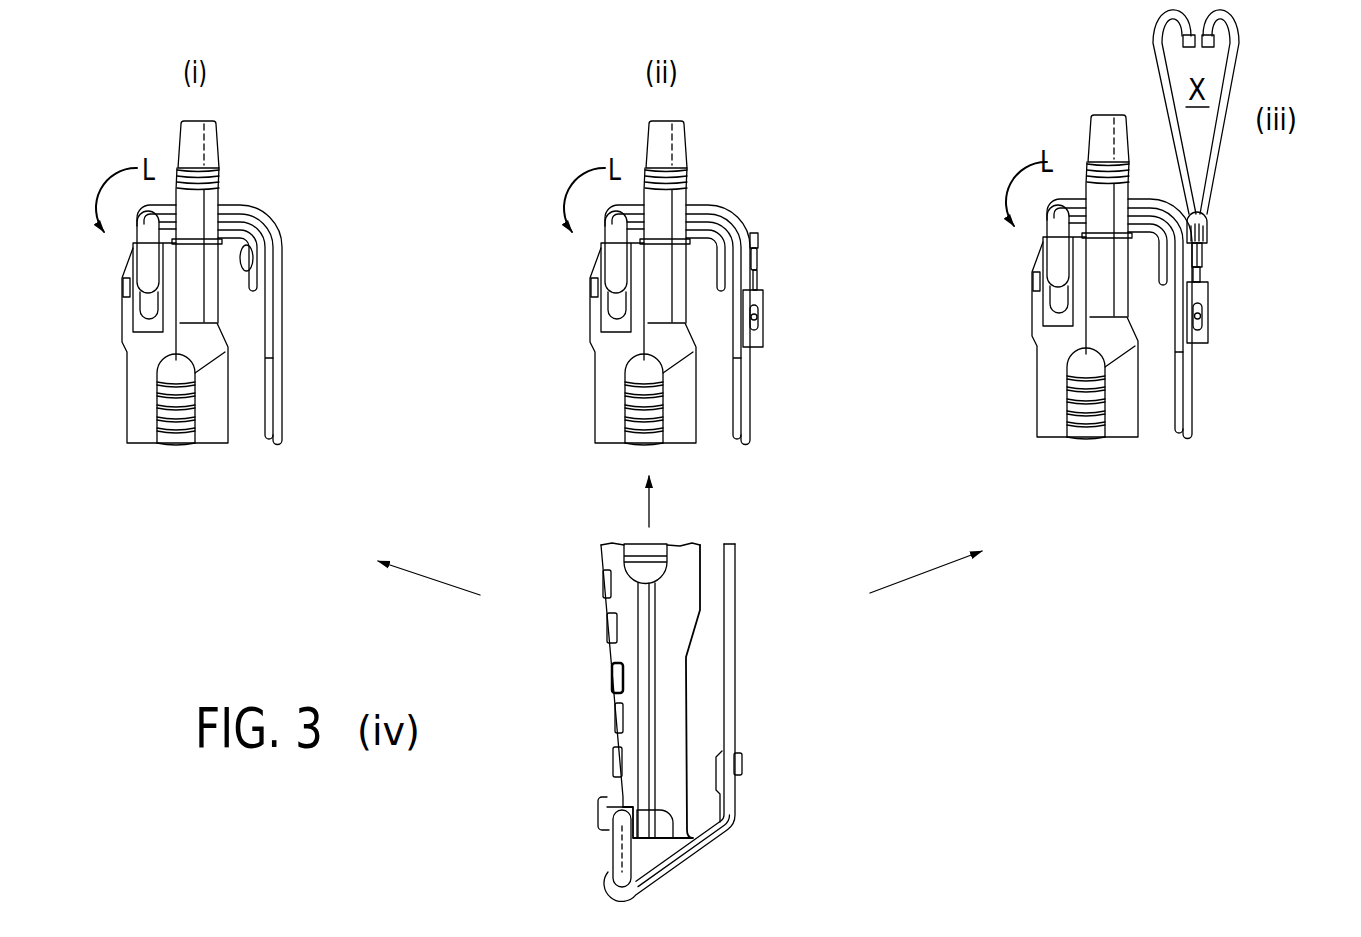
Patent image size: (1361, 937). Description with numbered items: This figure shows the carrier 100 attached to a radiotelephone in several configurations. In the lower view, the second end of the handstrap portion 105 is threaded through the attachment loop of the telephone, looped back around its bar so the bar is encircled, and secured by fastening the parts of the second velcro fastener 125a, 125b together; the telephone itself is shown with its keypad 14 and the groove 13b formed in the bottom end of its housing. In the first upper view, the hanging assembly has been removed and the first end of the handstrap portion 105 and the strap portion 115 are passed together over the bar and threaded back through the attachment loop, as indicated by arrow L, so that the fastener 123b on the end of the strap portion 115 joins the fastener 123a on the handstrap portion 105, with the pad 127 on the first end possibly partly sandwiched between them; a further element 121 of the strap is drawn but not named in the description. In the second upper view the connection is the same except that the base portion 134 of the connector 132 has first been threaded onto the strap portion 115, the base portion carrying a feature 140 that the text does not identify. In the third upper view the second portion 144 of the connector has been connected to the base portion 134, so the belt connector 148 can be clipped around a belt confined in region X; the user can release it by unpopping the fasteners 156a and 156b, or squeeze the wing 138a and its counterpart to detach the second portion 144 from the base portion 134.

The carrier 100 is at (702, 723).
The handstrap portion 105 is at (716, 298).
The strap portion 115 is at (664, 293).
The arm 121 is at (715, 293).
The first velcro fastener part 123a is at (267, 273).
The first velcro fastener part 123b is at (272, 243).
The pad 127 is at (247, 242).
The base portion 134 is at (781, 287).
The connector 132 is at (1236, 272).
The wing 138a is at (758, 260).
The aperture 140 is at (760, 317).
The second portion of the connector 144 is at (1209, 241).
The belt connector 148 is at (1146, 88).
The fastener 156a is at (1213, 42).
The fastener 156b is at (1183, 42).
The keypad 14 is at (612, 680).
The second velcro fastener part 125a is at (742, 776).
The second velcro fastener part 125b is at (707, 790).
The groove 13b is at (683, 826).